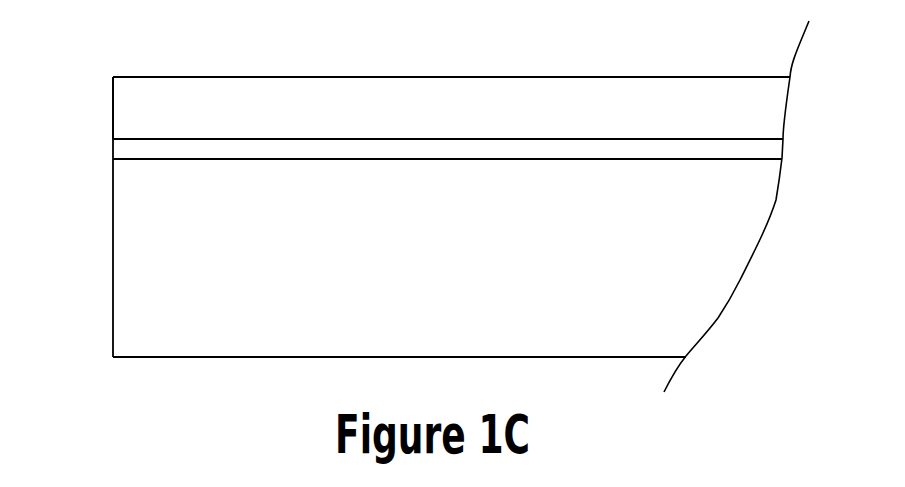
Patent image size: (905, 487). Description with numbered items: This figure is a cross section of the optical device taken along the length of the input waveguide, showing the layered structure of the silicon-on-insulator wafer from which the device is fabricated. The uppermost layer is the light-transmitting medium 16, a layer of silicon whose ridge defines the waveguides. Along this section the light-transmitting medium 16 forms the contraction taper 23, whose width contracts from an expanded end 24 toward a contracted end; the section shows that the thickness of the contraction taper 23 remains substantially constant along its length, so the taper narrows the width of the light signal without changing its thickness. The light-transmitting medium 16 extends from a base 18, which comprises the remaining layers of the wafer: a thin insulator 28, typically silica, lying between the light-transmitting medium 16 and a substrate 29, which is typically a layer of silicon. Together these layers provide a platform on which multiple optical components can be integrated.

The light-transmitting medium 16 is at (245, 108).
The contraction taper 23 is at (376, 77).
The expanded end 24 is at (113, 107).
The insulator 28 is at (297, 140).
The base 18 is at (63, 143).
The substrate 29 is at (265, 340).